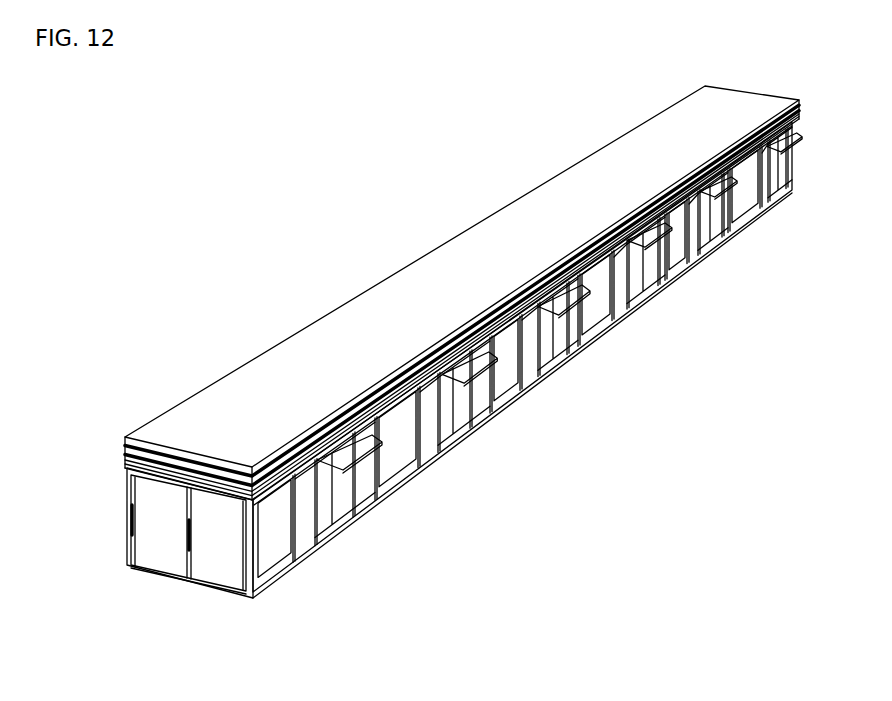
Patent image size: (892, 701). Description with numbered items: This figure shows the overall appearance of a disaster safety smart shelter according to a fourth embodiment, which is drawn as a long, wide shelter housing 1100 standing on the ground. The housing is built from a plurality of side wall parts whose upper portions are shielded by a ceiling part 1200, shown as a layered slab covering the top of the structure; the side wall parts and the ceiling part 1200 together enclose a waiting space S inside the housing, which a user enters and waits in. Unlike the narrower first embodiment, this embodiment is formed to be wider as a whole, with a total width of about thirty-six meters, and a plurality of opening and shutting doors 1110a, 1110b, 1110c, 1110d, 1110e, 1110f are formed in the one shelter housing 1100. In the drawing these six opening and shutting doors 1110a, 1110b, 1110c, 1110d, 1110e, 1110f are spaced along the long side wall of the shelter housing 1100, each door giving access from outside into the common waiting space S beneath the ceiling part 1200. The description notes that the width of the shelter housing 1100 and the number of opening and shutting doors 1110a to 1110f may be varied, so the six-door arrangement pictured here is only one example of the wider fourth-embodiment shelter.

The housing module 1100 is at (437, 363).
The ceiling part 1200 is at (236, 368).
The opening and shutting door 1110a is at (337, 515).
The opening and shutting door 1110b is at (458, 425).
The opening and shutting door 1110c is at (545, 357).
The opening and shutting door 1110d is at (633, 294).
The opening and shutting door 1110e is at (715, 241).
The opening and shutting door 1110f is at (784, 196).
The waiting space S is at (496, 377).